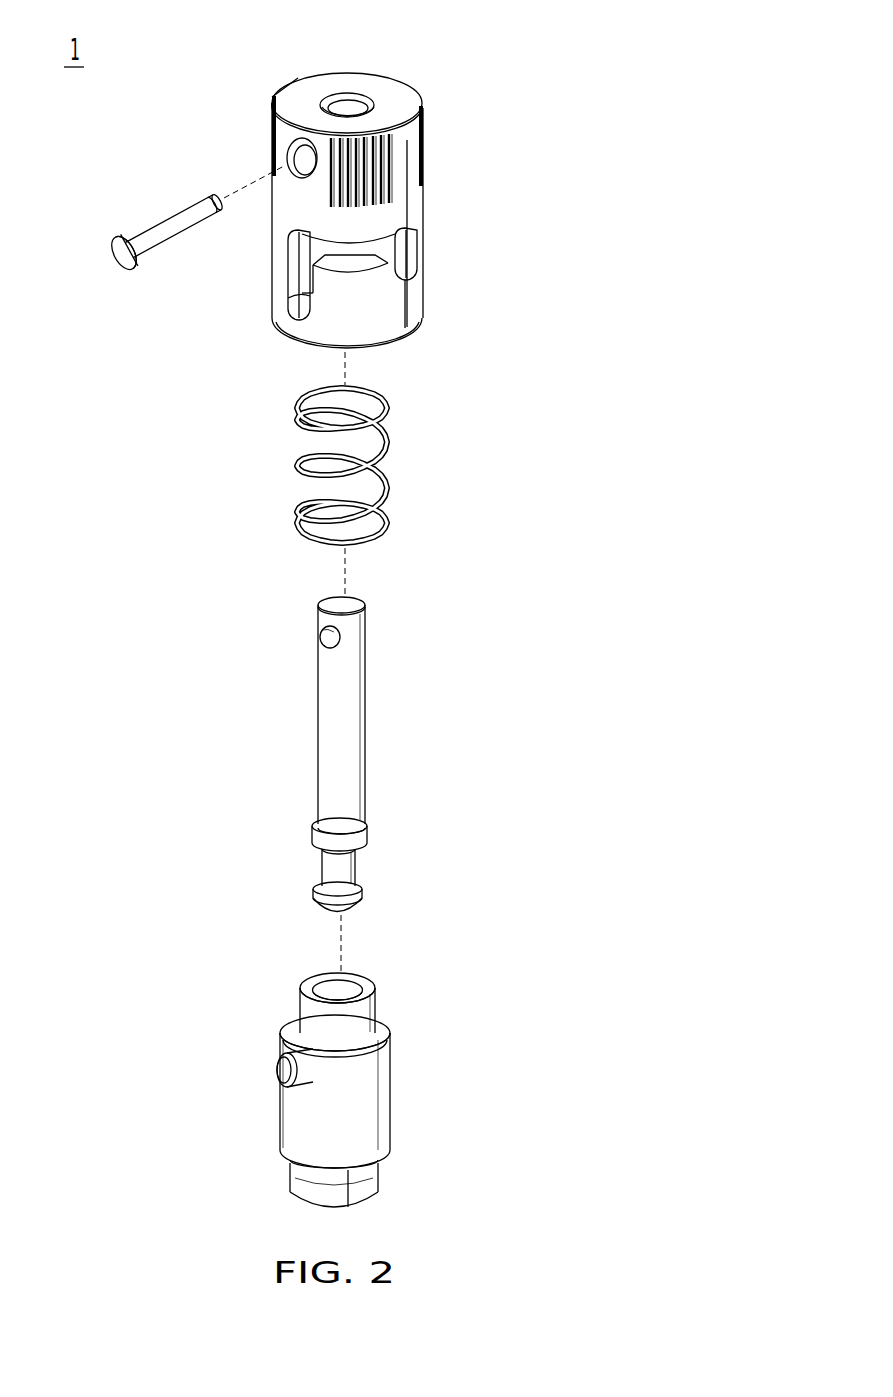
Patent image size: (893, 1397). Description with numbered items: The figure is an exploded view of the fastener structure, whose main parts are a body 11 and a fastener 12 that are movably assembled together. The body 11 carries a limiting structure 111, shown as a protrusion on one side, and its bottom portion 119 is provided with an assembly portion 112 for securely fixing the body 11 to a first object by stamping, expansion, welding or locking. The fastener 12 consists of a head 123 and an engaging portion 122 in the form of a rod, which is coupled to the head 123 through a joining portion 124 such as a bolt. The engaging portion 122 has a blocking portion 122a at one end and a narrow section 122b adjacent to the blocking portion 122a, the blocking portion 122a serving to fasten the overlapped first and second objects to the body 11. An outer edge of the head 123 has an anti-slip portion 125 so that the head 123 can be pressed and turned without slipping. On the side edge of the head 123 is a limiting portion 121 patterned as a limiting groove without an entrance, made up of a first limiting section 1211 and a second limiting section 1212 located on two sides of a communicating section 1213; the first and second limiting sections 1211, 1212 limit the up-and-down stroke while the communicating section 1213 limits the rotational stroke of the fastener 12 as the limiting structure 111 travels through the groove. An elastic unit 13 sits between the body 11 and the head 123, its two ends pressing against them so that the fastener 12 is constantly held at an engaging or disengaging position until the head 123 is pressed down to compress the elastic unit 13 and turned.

The body 11 is at (390, 1085).
The limiting structure 111 is at (278, 1067).
The assembly portion 112 is at (300, 1178).
The bottom portion 119 is at (363, 1165).
The fastener 12 is at (438, 138).
The limiting portion 121 is at (290, 298).
The first limiting section 1211 is at (292, 314).
The second limiting section 1212 is at (400, 268).
The communicating section 1213 is at (356, 248).
The engaging portion 122 is at (347, 715).
The blocking portion 122a is at (362, 892).
The narrow section 122b is at (327, 867).
The head 123 is at (345, 82).
The joining portion 124 is at (162, 222).
The anti-slip portion 125 is at (393, 167).
The elastic unit 13 is at (388, 418).